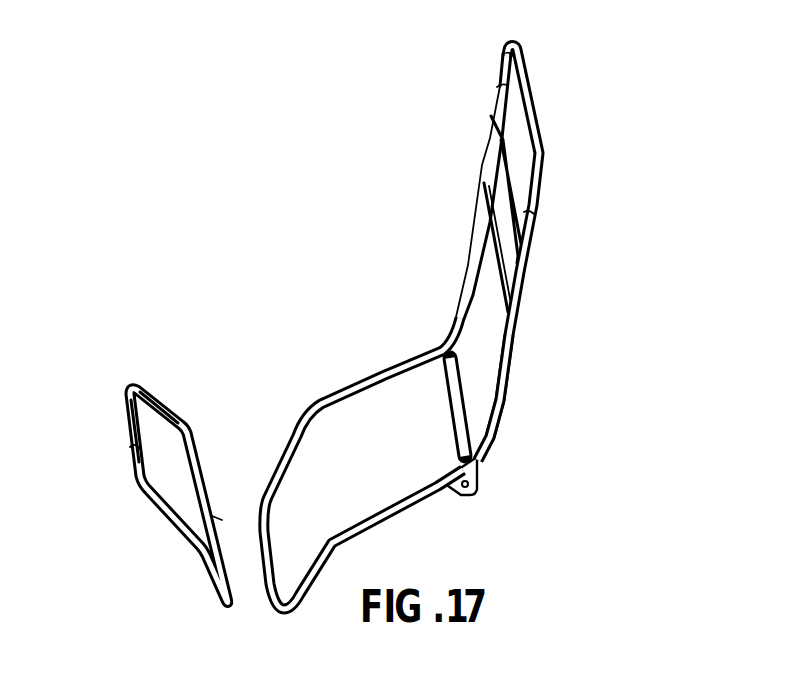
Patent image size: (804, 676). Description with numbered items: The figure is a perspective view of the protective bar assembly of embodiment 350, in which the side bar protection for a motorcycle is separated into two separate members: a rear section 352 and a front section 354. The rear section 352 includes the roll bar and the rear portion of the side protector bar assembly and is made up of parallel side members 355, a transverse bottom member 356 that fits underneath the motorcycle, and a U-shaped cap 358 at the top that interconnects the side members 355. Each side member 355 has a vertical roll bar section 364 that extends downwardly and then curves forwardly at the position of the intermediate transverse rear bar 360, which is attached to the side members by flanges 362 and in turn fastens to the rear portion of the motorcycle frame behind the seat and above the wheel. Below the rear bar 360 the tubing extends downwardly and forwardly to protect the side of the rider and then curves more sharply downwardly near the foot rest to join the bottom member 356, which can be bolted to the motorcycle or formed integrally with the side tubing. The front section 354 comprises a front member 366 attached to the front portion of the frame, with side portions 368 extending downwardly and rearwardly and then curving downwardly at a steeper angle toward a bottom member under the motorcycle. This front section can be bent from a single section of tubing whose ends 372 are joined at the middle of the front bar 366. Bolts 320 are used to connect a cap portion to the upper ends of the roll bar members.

The bolts 320 is at (221, 520).
The embodiment 350 is at (354, 332).
The rear section 352 is at (466, 328).
The front section 354 is at (159, 473).
The side members 355 is at (513, 318).
The transverse bottom member 356 is at (270, 553).
The U-shaped cap 358 is at (530, 107).
The rear bar 360 is at (458, 405).
The flanges 362 is at (478, 470).
The vertical roll bar section 364 is at (519, 281).
The front member 366 is at (128, 430).
The side portions 368 is at (167, 403).
The ends 372 is at (131, 449).